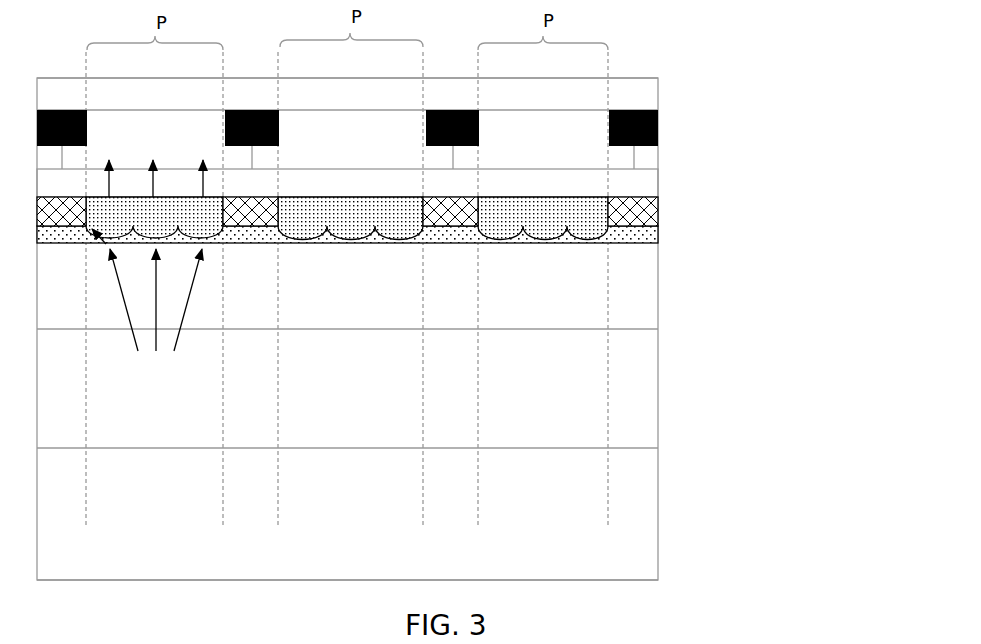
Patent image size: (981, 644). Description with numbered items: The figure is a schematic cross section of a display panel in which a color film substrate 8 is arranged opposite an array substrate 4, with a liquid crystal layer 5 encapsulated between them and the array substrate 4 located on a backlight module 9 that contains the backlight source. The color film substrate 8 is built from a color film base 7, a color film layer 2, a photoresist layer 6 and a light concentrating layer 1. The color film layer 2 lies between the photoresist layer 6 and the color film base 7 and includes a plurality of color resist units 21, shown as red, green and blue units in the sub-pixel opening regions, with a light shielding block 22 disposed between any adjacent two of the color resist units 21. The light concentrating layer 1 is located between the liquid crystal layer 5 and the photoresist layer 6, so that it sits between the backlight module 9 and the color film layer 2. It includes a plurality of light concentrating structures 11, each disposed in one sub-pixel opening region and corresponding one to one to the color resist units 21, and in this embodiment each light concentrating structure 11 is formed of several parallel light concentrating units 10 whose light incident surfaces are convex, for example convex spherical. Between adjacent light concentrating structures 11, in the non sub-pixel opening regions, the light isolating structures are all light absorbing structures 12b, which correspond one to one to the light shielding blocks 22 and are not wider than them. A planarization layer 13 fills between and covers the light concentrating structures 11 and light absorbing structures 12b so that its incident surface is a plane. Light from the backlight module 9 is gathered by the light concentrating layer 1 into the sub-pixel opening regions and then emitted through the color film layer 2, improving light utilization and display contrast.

The light concentrating layer 1 is at (401, 258).
The color film layer 2 is at (394, 133).
The array substrate 4 is at (630, 405).
The liquid crystal layer 5 is at (627, 318).
The photoresist layer 6 is at (633, 185).
The color film base 7 is at (592, 93).
The color film substrate 8 is at (777, 65).
The backlight module 9 is at (620, 530).
The light concentrating unit 10 is at (510, 232).
The light concentrating structure 11 is at (414, 245).
The light absorbing structure 12b is at (735, 287).
The planarization layer 13 is at (622, 242).
The color resist unit 21 is at (587, 138).
The light shielding block 22 is at (658, 135).